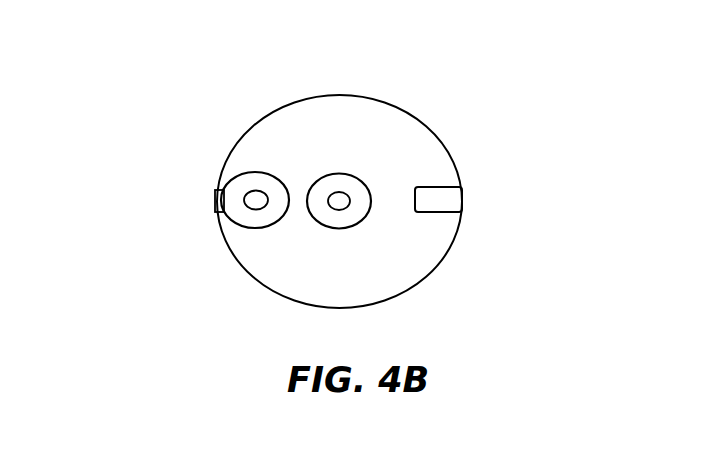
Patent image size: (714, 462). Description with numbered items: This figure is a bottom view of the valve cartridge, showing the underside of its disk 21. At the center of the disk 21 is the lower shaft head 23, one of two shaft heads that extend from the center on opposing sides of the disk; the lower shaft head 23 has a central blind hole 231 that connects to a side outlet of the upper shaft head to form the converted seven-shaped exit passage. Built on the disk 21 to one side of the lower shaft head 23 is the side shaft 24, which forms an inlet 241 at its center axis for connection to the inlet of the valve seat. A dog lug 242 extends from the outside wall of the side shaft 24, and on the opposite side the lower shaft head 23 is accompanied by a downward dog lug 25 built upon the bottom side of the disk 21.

The disk 21 is at (415, 155).
The lower shaft head 23 is at (345, 183).
The central blind hole 231 is at (337, 197).
The side shaft 24 is at (242, 189).
The inlet 241 is at (262, 202).
The dog lug 242 is at (215, 203).
The downward dog lug 25 is at (440, 200).